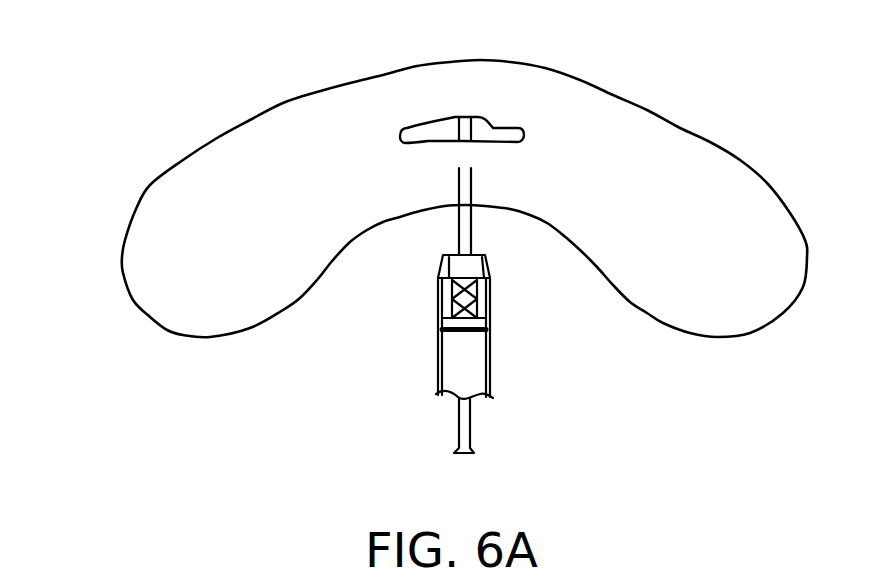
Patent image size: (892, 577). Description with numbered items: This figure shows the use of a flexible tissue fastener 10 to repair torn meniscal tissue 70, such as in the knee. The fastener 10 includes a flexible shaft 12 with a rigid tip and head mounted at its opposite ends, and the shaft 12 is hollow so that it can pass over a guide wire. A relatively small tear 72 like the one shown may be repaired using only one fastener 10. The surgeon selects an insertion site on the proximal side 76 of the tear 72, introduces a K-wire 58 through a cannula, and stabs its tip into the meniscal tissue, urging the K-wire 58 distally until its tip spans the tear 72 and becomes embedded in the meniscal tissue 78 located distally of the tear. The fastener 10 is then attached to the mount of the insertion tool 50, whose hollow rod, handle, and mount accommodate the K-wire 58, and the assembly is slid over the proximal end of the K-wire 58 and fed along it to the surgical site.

The flexible tissue fastener 10 is at (497, 327).
The flexible shaft 12 is at (450, 303).
The insertion tool 50 is at (493, 373).
The K-wire 58 is at (457, 192).
The meniscal tissue 70 is at (168, 200).
The tear 72 is at (514, 124).
The proximal side 76 is at (477, 170).
The meniscal tissue located distally of tear 78 is at (427, 90).